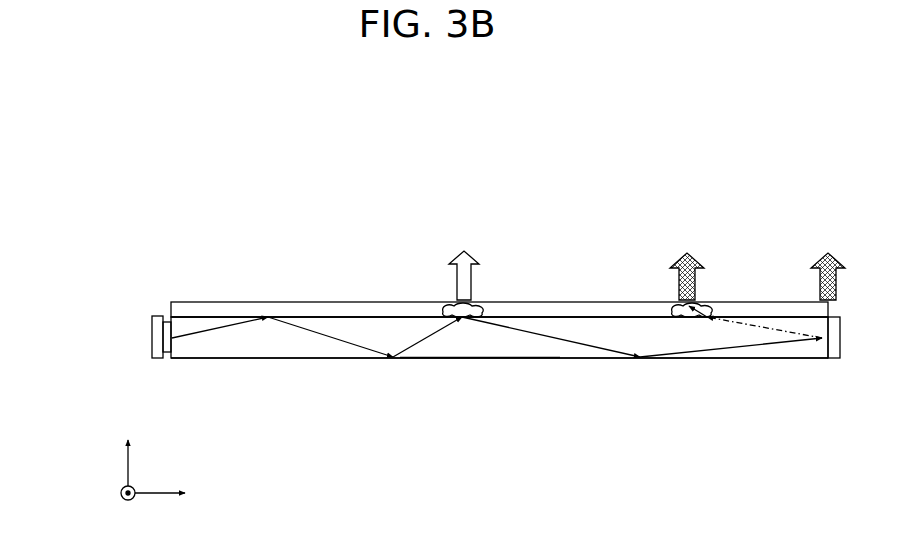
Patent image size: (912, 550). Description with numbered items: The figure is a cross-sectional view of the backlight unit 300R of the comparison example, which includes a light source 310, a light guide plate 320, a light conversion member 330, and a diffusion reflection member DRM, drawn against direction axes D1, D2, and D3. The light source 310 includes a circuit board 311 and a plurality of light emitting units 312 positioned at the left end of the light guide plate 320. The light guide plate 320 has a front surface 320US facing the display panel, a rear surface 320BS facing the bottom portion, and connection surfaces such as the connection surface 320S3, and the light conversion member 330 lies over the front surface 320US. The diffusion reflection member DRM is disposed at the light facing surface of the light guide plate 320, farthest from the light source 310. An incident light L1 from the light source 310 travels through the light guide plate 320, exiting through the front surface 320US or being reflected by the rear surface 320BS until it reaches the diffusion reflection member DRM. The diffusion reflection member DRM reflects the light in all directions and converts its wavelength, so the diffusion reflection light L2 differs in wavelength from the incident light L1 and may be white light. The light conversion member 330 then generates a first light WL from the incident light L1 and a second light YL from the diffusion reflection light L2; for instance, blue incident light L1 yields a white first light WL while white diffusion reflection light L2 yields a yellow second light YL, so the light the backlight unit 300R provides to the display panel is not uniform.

The backlight unit 300R is at (578, 208).
The light source 310 is at (75, 318).
The circuit board 311 is at (154, 345).
The light emitting units 312 is at (152, 326).
The light guide plate 320 is at (310, 346).
The front surface 320US is at (333, 316).
The rear surface 320BS is at (548, 359).
The connection surface 320S3 is at (479, 347).
The light conversion member 330 is at (222, 310).
The diffusion reflection member DRM is at (831, 359).
The incident light L1 is at (443, 312).
The diffusion reflection light L2 is at (672, 312).
The first light WL is at (464, 266).
The second light YL is at (757, 266).
The first direction D1 is at (174, 493).
The second direction D2 is at (115, 504).
The third direction D3 is at (128, 449).